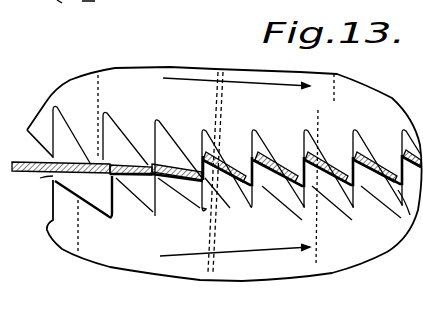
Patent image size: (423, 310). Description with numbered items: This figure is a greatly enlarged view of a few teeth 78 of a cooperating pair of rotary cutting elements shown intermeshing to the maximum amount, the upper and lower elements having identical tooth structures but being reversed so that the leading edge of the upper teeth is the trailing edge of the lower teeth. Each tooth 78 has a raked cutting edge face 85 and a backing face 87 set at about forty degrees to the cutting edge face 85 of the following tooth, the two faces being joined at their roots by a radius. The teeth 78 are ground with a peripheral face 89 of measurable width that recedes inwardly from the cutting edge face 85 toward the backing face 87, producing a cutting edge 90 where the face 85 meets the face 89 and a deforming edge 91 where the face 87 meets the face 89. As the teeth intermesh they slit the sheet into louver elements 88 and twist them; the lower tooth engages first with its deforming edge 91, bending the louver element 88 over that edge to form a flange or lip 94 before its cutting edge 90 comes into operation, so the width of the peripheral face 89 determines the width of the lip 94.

The teeth 78 is at (393, 160).
The cutting edge face 85 is at (203, 158).
The backing face 87 is at (162, 132).
The louvered element 88 is at (196, 185).
The peripheral face 89 is at (198, 152).
The cutting edge 90 is at (56, 182).
The deforming edge 91 is at (191, 160).
The flange or lip 94 is at (352, 224).